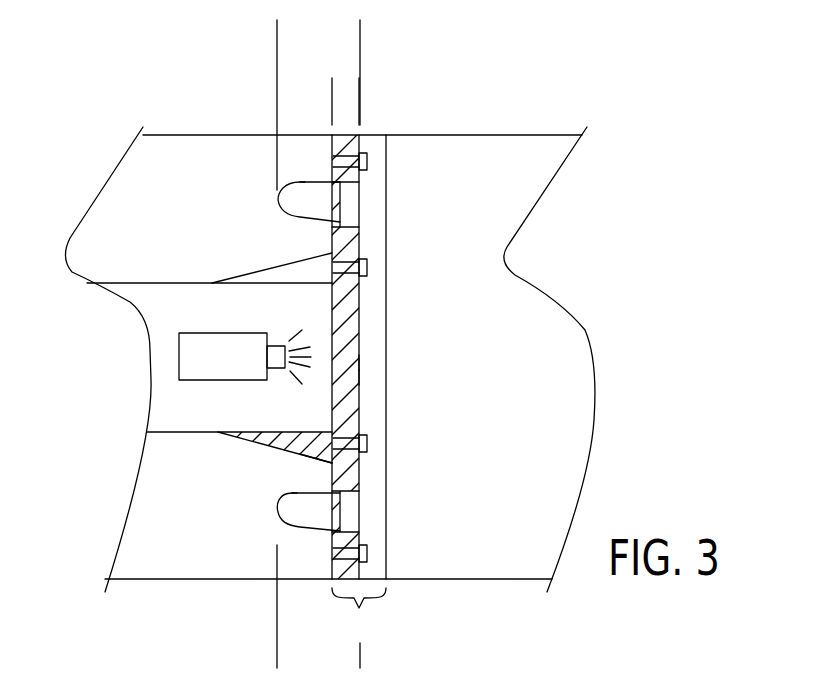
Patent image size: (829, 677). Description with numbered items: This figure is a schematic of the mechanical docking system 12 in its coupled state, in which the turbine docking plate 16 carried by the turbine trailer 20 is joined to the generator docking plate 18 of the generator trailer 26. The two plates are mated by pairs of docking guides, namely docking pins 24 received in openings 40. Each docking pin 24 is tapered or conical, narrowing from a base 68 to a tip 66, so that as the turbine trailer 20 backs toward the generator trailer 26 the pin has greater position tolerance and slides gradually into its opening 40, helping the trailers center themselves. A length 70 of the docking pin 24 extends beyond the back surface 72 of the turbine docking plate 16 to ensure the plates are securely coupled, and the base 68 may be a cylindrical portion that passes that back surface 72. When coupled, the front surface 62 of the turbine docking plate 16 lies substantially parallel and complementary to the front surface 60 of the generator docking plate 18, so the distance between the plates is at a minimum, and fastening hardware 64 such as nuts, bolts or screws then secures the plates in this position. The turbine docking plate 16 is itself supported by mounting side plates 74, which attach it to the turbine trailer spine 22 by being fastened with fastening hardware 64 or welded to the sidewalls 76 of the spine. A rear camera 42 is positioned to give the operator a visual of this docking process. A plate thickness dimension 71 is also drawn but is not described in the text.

The mechanical docking system 12 is at (359, 614).
The turbine docking plate 16 is at (350, 143).
The generator docking plate 18 is at (373, 145).
The turbine trailer 20 is at (173, 158).
The turbine trailer spine 22 is at (142, 295).
The docking pin 24 is at (300, 218).
The generator trailer 26 is at (473, 157).
The opening 40 is at (365, 207).
The rear camera 42 is at (222, 382).
The front surface of generator docking plate 60 is at (360, 377).
The front surface of turbine docking plate 62 is at (360, 363).
The fastening hardware 64 is at (367, 172).
The tip of docking pin 66 is at (282, 188).
The base of docking pin 68 is at (350, 210).
The length of docking pin 70 is at (360, 30).
The plate thickness dimension 71 is at (385, 90).
The back surface of turbine docking plate 72 is at (330, 468).
The mounting side plate 74 is at (258, 271).
The sidewall of turbine trailer spine 76 is at (189, 283).